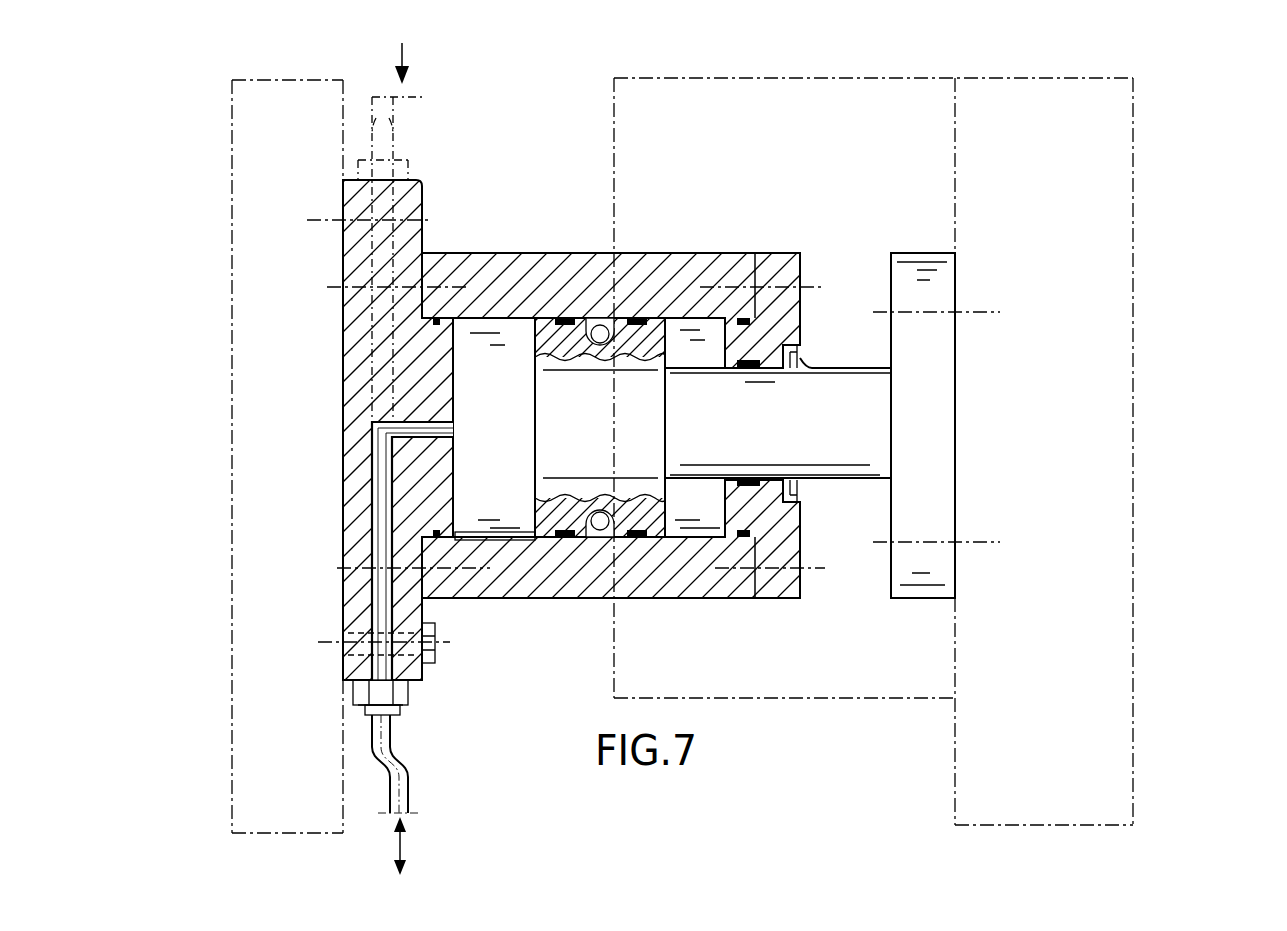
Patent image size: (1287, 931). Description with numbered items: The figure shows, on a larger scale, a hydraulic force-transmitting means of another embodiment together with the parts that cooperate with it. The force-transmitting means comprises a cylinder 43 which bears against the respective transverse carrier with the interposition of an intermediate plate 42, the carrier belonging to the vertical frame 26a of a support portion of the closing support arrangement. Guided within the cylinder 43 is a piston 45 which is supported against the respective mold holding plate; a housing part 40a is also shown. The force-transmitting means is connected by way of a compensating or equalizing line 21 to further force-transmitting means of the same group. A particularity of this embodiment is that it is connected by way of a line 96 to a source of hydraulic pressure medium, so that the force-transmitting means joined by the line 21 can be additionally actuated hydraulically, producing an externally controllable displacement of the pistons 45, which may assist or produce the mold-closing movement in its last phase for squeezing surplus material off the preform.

The intermediate plate 42 is at (255, 727).
The vertical frame 26a is at (821, 92).
The line 96 is at (410, 118).
The compensating or equalizing line 21 is at (408, 773).
The cylinder 43 is at (530, 262).
The bearing housing lower wall 40a is at (642, 600).
The piston 45 is at (540, 448).